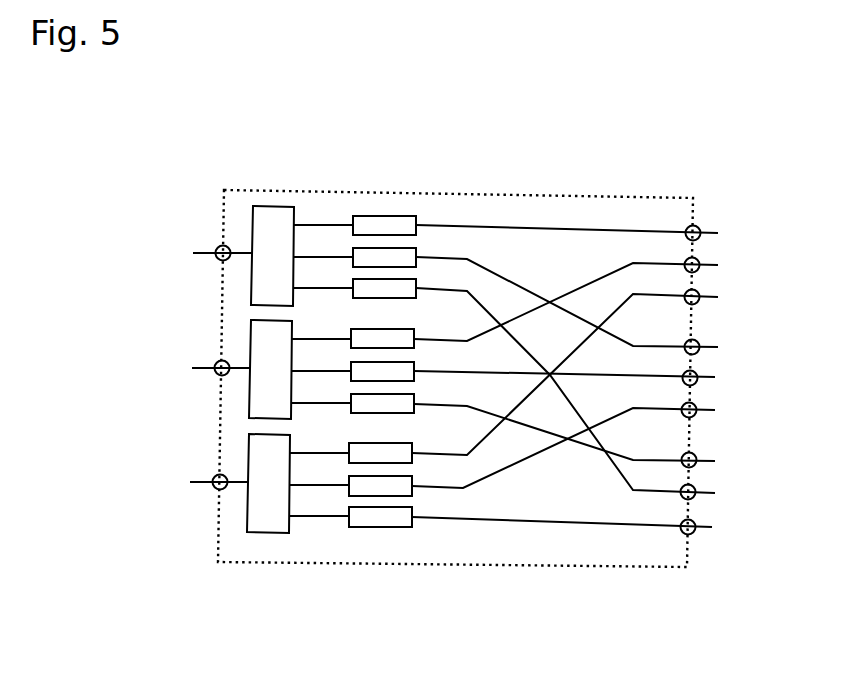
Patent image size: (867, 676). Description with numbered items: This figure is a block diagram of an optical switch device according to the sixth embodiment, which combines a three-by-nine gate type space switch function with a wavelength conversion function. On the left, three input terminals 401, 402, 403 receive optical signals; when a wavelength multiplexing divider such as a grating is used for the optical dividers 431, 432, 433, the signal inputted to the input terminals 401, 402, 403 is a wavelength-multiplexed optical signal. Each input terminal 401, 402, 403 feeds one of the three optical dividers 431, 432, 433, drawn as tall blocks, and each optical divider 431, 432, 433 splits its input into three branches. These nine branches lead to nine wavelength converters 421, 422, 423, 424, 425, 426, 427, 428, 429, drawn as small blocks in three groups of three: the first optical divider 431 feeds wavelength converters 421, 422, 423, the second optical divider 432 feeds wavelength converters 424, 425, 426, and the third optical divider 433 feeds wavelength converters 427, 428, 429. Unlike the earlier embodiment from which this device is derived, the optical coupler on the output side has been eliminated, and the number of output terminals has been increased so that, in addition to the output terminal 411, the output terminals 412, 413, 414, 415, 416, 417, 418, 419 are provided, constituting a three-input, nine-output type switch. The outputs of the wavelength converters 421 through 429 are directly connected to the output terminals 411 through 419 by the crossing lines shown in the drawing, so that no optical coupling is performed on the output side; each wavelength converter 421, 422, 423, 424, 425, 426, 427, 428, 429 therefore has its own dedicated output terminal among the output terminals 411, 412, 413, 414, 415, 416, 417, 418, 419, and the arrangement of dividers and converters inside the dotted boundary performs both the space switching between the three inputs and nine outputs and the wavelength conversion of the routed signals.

The input terminal 401 is at (216, 252).
The input terminal 402 is at (215, 367).
The input terminal 403 is at (213, 480).
The optical divider 431 is at (252, 232).
The optical divider 432 is at (250, 340).
The optical divider 433 is at (248, 455).
The wavelength converter 421 is at (405, 216).
The wavelength converter 422 is at (417, 250).
The wavelength converter 423 is at (417, 282).
The wavelength converter 424 is at (417, 333).
The wavelength converter 425 is at (417, 367).
The wavelength converter 426 is at (417, 412).
The wavelength converter 427 is at (413, 458).
The wavelength converter 428 is at (413, 493).
The wavelength converter 429 is at (395, 530).
The output terminal 411 is at (698, 228).
The output terminal 412 is at (698, 260).
The output terminal 413 is at (697, 292).
The output terminal 414 is at (697, 343).
The output terminal 415 is at (695, 374).
The output terminal 416 is at (695, 405).
The output terminal 417 is at (695, 455).
The output terminal 418 is at (693, 487).
The output terminal 419 is at (692, 521).